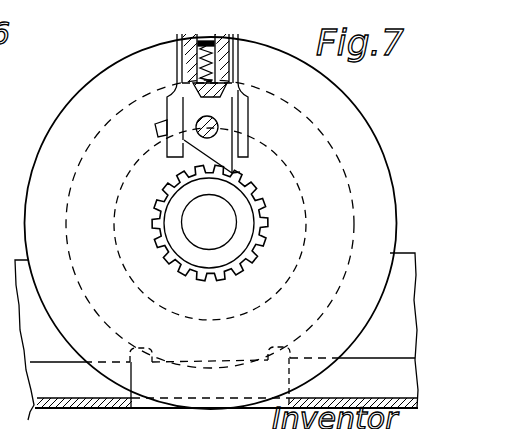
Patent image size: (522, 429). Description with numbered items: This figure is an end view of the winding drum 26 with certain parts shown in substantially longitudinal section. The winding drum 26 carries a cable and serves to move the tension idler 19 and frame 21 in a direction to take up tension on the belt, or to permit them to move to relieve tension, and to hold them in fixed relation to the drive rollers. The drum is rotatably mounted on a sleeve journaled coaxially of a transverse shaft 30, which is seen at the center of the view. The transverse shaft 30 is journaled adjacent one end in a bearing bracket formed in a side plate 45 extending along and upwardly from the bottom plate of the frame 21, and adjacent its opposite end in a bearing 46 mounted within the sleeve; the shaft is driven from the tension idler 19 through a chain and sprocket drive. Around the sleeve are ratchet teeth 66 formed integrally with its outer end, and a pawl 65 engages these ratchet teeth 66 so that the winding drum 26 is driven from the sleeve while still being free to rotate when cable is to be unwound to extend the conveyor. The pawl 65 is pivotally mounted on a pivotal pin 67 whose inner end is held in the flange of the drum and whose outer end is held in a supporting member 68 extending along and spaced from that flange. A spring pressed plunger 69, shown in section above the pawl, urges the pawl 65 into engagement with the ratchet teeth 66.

The tension idler 19 is at (26, 344).
The frame 21 is at (90, 408).
The winding drum 26 is at (44, 145).
The transverse shaft 30 is at (226, 207).
The side plate 45 is at (403, 254).
The bearing 46 is at (231, 253).
The pawl 65 is at (232, 163).
The ratchet teeth 66 is at (240, 172).
The pivotal pin 67 is at (218, 122).
The supporting member 68 is at (164, 100).
The spring pressed plunger 69 is at (243, 77).